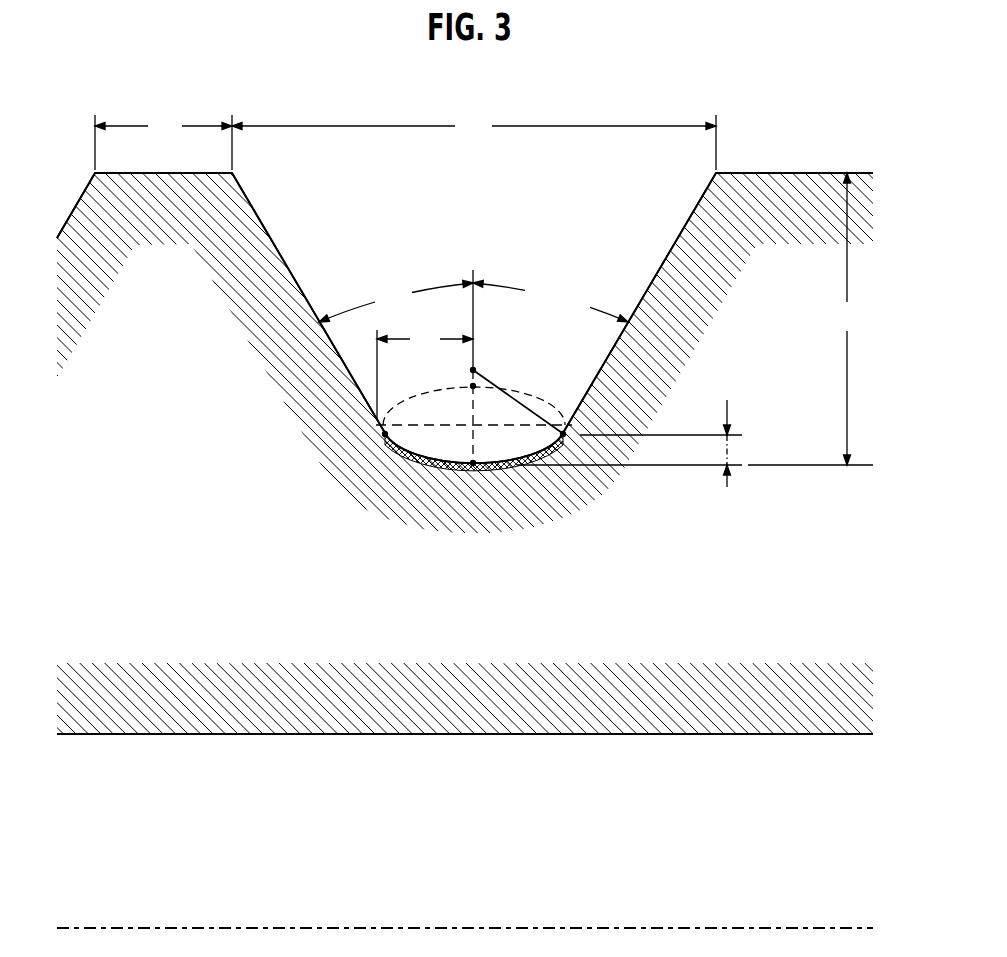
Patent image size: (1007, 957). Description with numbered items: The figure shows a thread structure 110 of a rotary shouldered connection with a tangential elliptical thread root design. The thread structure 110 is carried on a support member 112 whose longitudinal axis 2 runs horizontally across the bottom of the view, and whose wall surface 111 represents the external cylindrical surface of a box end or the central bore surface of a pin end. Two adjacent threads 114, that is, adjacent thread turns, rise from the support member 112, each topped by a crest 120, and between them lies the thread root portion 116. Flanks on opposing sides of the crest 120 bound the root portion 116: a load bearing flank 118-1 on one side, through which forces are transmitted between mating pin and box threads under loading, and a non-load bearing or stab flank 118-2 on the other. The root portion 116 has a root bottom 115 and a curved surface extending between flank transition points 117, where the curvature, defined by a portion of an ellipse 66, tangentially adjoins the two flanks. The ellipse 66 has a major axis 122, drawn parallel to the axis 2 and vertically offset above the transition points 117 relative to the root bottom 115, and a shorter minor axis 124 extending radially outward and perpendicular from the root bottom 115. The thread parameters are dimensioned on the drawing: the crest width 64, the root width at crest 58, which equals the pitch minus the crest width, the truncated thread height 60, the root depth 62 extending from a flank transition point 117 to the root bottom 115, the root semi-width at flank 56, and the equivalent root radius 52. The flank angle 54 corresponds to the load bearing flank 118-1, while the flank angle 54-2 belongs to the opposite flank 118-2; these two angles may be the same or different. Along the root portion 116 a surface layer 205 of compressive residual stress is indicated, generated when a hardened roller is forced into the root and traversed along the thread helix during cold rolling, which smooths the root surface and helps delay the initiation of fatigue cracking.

The thread structure 110 is at (754, 93).
The support member 112 is at (493, 711).
The wall surface 111 is at (262, 735).
The threads 114 is at (183, 219).
The crest 120 is at (778, 173).
The load bearing flank 118-1 is at (287, 211).
The non-load bearing flank 118-2 is at (72, 215).
The flank transition points 117 is at (383, 436).
The major axis 122 is at (399, 436).
The minor axis 124 is at (470, 440).
The root bottom 115 is at (473, 467).
The thread root portion 116 is at (529, 458).
The surface layer 205 is at (412, 470).
The crest width 64 is at (163, 141).
The root width at crest 58 is at (474, 141).
The truncated thread height 60 is at (847, 319).
The root depth 62 is at (695, 429).
The root semi-width at flank 56 is at (425, 373).
The flank angle 54 is at (396, 303).
The flank angle of non-load bearing flank 54-2 is at (551, 303).
The equivalent root radius 52 is at (475, 371).
The ellipse 66 is at (547, 404).
The longitudinal axis 2 is at (640, 928).